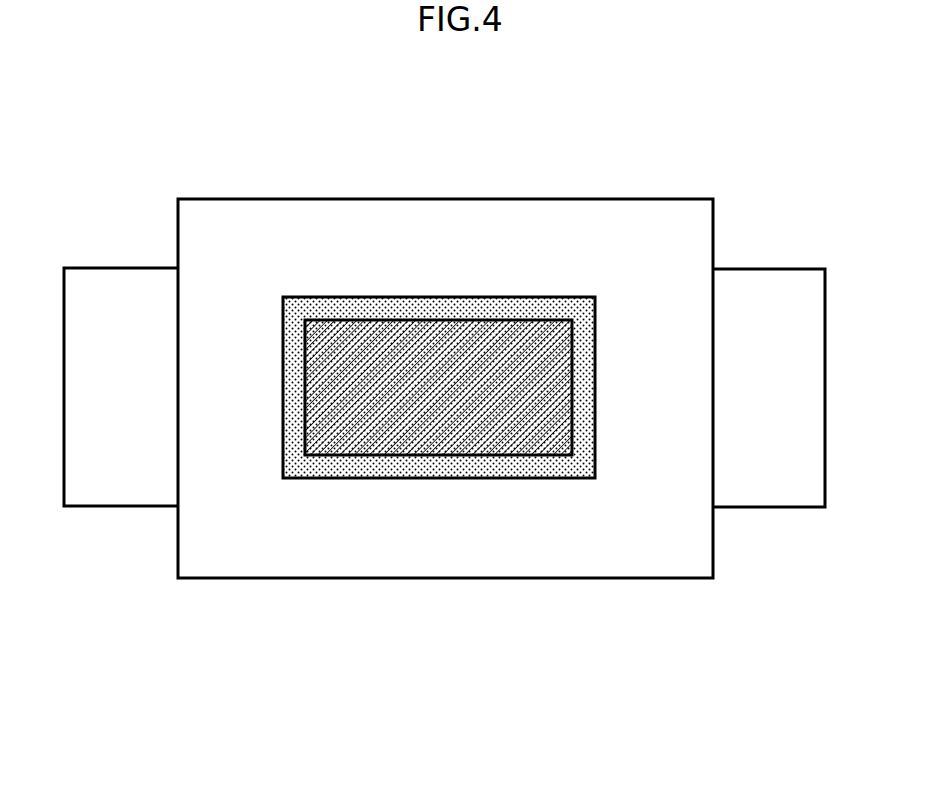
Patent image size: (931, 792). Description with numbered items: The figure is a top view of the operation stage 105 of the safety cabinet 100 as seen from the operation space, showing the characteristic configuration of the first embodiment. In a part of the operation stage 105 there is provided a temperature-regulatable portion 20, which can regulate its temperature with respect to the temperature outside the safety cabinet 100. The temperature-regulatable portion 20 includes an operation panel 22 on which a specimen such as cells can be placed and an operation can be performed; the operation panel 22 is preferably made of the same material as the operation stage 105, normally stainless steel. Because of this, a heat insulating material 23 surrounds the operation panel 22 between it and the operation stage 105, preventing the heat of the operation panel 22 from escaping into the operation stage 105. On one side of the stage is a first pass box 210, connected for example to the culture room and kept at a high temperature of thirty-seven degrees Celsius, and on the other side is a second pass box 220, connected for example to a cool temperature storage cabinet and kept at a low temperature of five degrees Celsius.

The safety cabinet 100 is at (176, 156).
The operation stage 105 is at (222, 582).
The temperature-regulatable portion 20 is at (516, 274).
The operation panel 22 is at (375, 318).
The heat insulating material 23 is at (315, 307).
The first pass box 210 is at (105, 258).
The second pass box 220 is at (760, 260).